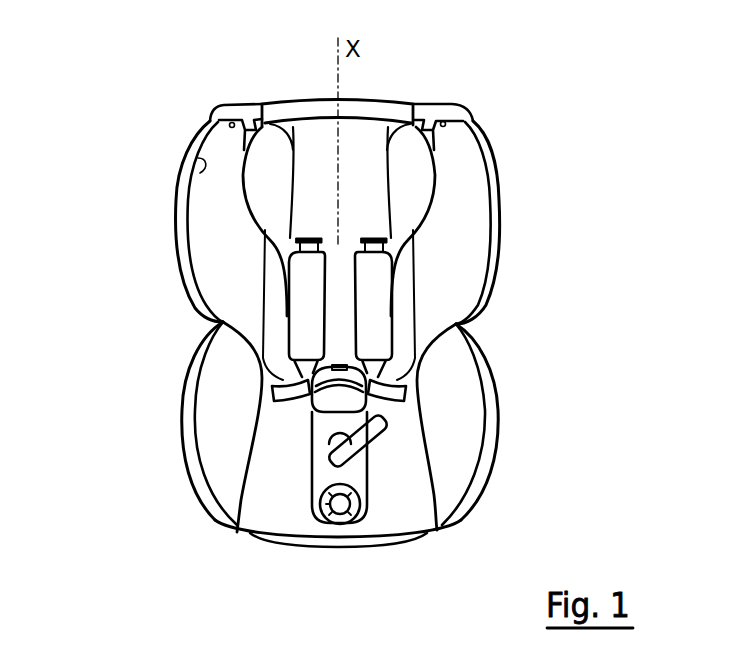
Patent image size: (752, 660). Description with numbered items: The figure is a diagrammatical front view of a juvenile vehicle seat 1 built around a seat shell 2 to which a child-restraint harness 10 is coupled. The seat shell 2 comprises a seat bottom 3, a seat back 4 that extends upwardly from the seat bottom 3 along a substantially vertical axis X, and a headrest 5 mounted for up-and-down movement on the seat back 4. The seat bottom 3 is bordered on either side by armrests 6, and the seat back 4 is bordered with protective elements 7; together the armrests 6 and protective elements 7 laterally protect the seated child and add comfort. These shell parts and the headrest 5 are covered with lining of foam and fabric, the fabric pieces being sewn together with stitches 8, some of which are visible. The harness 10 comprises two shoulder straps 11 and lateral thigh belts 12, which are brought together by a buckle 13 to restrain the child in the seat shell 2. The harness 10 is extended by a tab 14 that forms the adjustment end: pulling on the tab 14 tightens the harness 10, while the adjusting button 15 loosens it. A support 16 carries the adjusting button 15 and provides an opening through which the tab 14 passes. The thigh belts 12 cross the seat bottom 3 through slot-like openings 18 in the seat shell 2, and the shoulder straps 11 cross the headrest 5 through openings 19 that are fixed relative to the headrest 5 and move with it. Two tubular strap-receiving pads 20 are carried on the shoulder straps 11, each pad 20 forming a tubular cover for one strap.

The juvenile vehicle seat 1 is at (538, 212).
The seat shell 2 is at (418, 498).
The seat bottom 3 is at (263, 503).
The seat back 4 is at (380, 97).
The headrest 5 is at (327, 137).
The armrests 6 is at (188, 413).
The protective elements 7 is at (185, 229).
The stitches 8 is at (263, 110).
The child-restraint harness 10 is at (392, 357).
The shoulder straps 11 is at (375, 245).
The lateral thigh belts 12 is at (270, 368).
The buckle 13 is at (312, 405).
The tab 14 is at (368, 437).
The adjusting button 15 is at (332, 437).
The support 16 is at (322, 474).
The openings 18 is at (405, 398).
The openings 19 is at (363, 240).
The tubular strap-receiving pads 20 is at (313, 277).